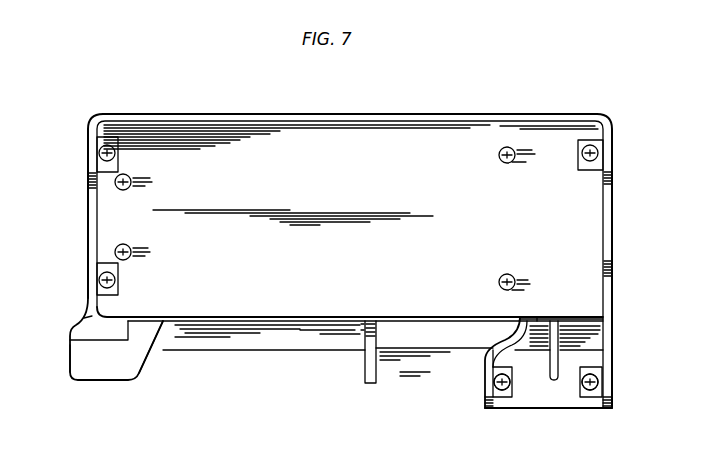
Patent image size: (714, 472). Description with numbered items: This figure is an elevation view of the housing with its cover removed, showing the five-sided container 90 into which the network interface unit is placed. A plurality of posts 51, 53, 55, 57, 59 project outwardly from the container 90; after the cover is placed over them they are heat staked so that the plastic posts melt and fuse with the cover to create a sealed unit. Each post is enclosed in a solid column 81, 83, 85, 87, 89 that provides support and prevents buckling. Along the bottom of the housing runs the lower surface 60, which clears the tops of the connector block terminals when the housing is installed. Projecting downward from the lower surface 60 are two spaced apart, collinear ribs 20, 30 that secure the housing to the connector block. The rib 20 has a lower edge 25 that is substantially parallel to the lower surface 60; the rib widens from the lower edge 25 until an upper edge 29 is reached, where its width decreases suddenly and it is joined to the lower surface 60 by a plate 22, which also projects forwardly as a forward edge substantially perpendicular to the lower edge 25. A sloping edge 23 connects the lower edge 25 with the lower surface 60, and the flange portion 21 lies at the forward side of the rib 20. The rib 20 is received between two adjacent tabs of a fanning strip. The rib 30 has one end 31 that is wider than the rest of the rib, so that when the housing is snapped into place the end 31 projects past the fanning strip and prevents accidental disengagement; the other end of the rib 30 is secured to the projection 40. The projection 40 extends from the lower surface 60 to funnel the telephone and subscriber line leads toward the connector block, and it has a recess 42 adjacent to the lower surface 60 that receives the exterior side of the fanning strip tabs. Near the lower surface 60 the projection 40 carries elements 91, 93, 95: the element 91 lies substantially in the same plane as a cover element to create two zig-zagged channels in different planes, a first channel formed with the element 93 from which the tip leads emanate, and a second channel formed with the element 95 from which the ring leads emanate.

The rib 20 is at (119, 361).
The side flange 21 is at (68, 360).
The plate 22 is at (84, 320).
The sloping edge 23 is at (160, 345).
The lower edge 25 is at (110, 383).
The upper edge 29 is at (90, 338).
The rib 30 is at (398, 377).
The end 31 is at (362, 335).
The projection 40 is at (555, 400).
The recess 42 is at (493, 342).
The post 51 is at (100, 278).
The post 53 is at (497, 385).
The post 55 is at (598, 384).
The post 57 is at (598, 150).
The post 59 is at (100, 152).
The lower surface 60 is at (300, 330).
The solid column 81 is at (120, 272).
The solid column 83 is at (505, 408).
The solid column 85 is at (591, 400).
The solid column 87 is at (582, 155).
The solid column 89 is at (120, 162).
The container 90 is at (418, 137).
The element 91 is at (556, 320).
The element 93 is at (537, 315).
The element 95 is at (580, 313).